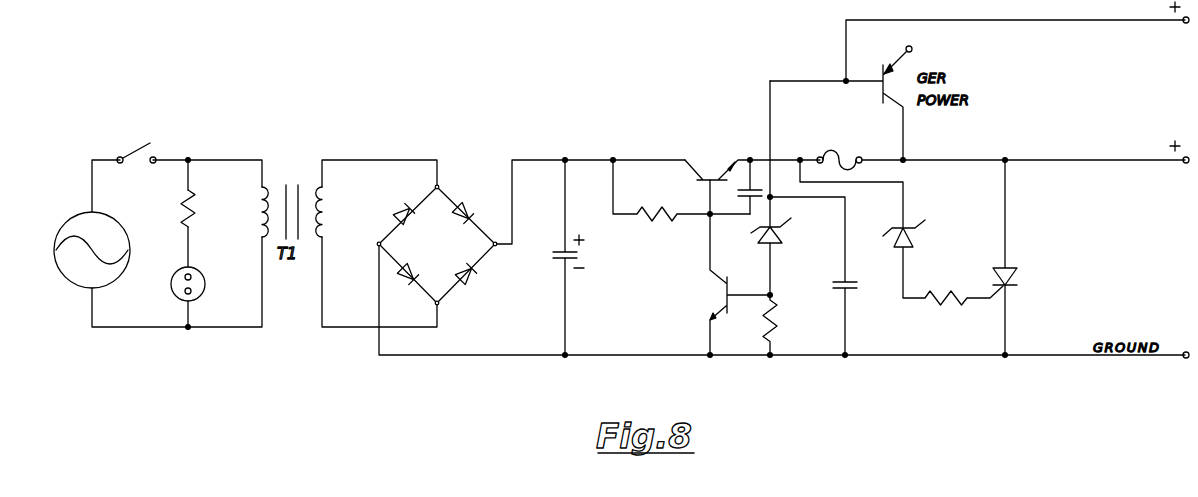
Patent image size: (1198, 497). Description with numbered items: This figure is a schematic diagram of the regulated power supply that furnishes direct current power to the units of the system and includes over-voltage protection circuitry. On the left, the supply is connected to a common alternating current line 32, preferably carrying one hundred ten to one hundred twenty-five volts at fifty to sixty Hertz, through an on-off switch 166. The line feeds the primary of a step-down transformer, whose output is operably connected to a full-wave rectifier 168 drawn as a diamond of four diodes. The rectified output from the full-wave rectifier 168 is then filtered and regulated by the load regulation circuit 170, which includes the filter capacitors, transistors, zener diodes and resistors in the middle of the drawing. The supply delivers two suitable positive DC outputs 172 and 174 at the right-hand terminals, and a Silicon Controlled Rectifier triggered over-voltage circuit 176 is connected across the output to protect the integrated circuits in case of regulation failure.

The alternating current line 32 is at (68, 215).
The on-off switch 166 is at (148, 152).
The full-wave rectifier 168 is at (462, 254).
The load regulation circuit 170 is at (816, 318).
The positive DC output 172 is at (1183, 27).
The positive DC output 174 is at (1185, 167).
The SCR triggered over-voltage circuit 176 is at (976, 231).